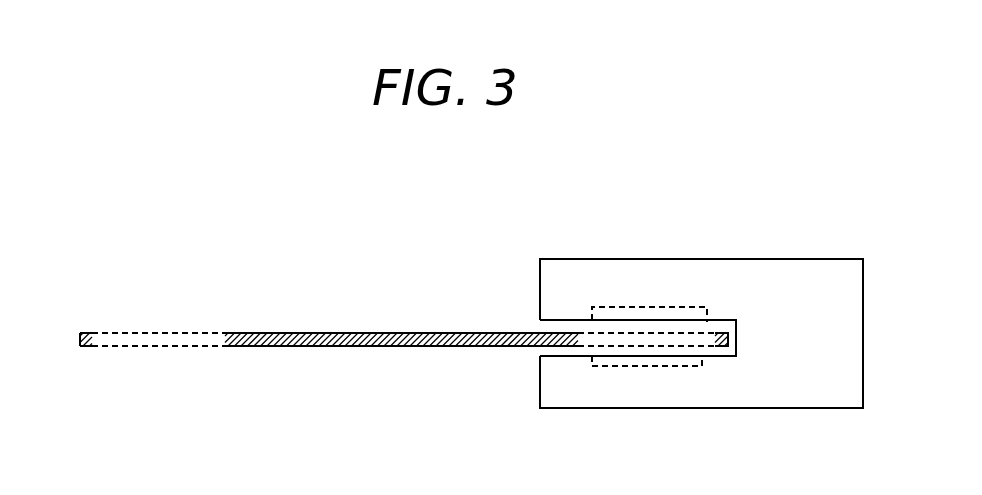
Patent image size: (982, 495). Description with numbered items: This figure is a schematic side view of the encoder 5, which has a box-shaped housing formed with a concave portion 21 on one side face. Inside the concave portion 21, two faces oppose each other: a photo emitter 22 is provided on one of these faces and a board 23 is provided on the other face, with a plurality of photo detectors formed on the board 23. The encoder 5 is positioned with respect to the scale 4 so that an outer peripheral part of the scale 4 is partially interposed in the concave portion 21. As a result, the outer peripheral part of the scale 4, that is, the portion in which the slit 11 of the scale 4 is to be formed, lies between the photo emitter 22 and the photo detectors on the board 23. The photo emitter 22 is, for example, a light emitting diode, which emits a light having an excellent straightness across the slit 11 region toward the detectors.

The scale 4 is at (305, 323).
The encoder 5 is at (794, 259).
The slit 11 is at (168, 334).
The concave portion 21 is at (520, 357).
The photo emitter 22 is at (630, 307).
The board 23 is at (637, 368).